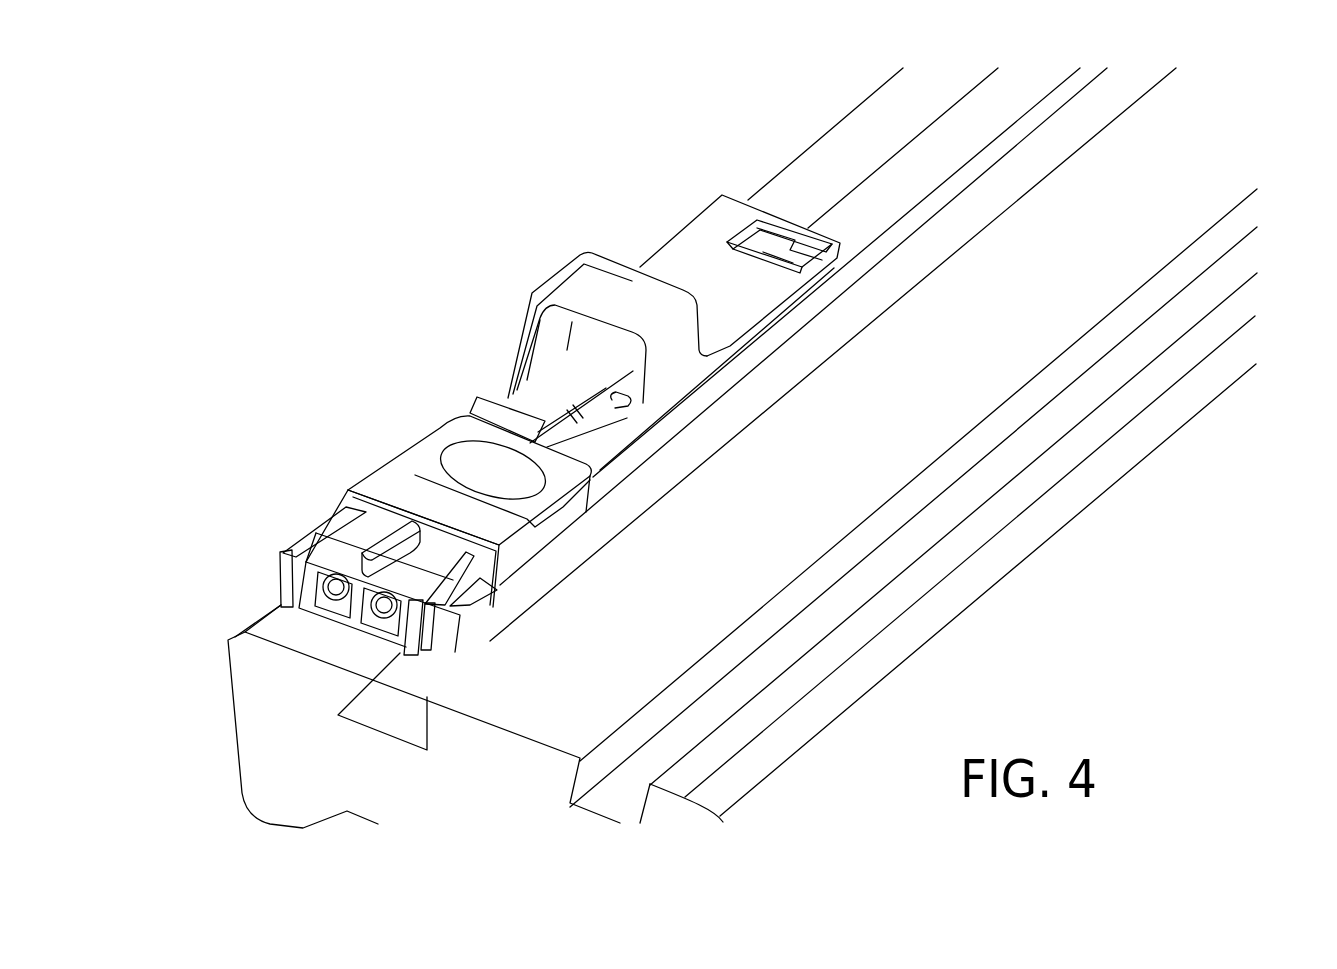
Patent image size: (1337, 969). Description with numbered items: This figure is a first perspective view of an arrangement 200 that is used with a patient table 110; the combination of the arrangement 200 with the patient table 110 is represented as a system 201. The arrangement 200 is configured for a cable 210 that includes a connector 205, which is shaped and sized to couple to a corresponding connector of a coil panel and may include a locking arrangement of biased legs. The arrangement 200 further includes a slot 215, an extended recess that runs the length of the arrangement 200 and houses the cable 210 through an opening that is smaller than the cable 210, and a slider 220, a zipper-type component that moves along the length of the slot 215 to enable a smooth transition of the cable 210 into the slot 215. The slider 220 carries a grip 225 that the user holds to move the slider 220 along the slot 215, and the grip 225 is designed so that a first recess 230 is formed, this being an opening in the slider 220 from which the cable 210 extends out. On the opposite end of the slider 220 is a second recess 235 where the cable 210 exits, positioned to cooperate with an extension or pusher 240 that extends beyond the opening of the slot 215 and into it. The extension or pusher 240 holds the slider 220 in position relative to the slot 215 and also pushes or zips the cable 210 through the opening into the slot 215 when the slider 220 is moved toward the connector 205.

The patient table 110 is at (1032, 525).
The arrangement 200 is at (428, 186).
The system 201 is at (1190, 168).
The connector 205 is at (438, 442).
The cable 210 is at (615, 397).
The slot 215 is at (833, 150).
The slider 220 is at (730, 300).
The grip 225 is at (578, 277).
The first recess 230 is at (580, 369).
The second recess 235 is at (717, 194).
The extension or pusher 240 is at (834, 263).